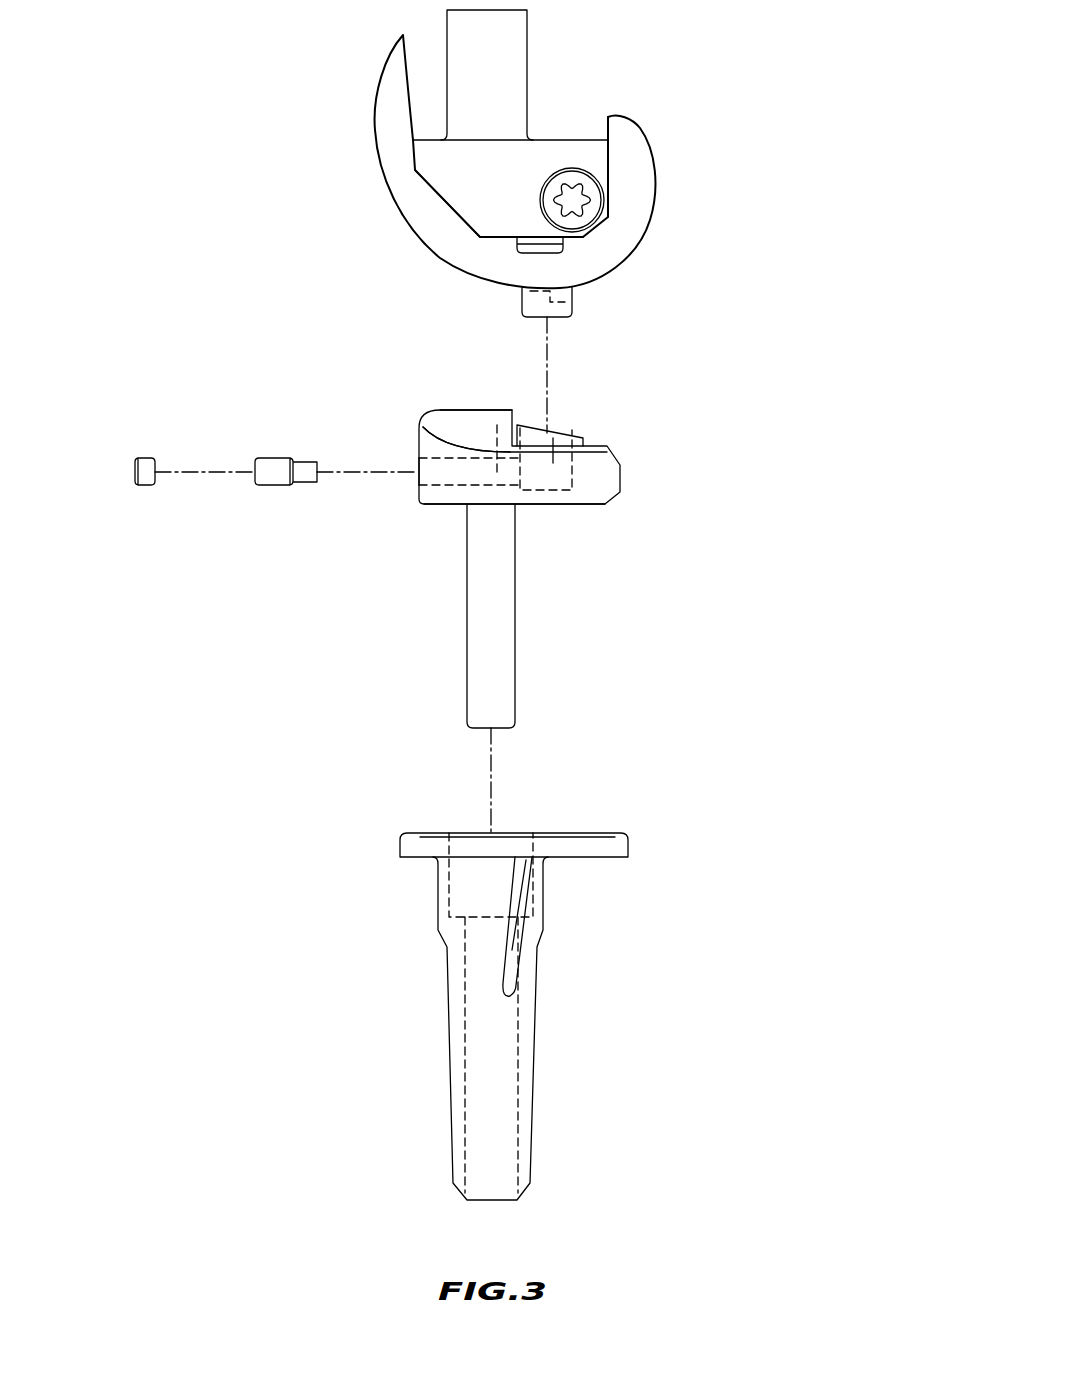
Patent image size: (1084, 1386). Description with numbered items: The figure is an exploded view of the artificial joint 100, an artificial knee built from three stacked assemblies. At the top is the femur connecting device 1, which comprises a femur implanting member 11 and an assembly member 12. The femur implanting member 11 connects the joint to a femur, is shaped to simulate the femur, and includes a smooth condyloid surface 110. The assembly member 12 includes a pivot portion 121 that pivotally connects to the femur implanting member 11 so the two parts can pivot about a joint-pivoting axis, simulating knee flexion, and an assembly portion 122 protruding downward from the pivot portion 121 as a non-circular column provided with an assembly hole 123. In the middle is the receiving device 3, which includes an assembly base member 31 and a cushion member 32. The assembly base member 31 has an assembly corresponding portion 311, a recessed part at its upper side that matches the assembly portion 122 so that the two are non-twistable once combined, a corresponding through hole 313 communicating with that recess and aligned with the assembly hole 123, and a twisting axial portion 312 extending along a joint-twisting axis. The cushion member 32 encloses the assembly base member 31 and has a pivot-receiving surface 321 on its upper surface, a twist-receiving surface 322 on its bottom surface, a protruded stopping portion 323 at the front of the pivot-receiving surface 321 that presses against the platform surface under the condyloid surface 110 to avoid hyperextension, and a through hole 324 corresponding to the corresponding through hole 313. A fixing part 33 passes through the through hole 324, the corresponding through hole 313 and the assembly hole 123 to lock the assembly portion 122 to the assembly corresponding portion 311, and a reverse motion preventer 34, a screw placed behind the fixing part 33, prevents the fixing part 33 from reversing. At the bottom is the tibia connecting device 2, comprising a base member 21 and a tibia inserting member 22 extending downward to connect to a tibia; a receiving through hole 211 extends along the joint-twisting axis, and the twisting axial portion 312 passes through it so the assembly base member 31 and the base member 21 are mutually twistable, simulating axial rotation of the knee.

The artificial joint 100 is at (814, 73).
The femur connecting device 1 is at (828, 100).
The femur implanting member 11 is at (628, 158).
The condyloid surface 110 is at (425, 245).
The assembly member 12 is at (780, 185).
The pivot portion 121 is at (593, 200).
The assembly portion 122 is at (570, 287).
The assembly hole 123 is at (573, 303).
The receiving device 3 is at (714, 385).
The assembly base member 31 is at (560, 438).
The assembly corresponding portion 311 is at (555, 438).
The twisting axial portion 312 is at (493, 617).
The corresponding through hole 313 is at (497, 425).
The cushion member 32 is at (603, 477).
The pivot-receiving surface 321 is at (450, 428).
The twist-receiving surface 322 is at (443, 497).
The stopping portion 323 is at (472, 422).
The through hole 324 is at (417, 475).
The fixing part 33 is at (272, 470).
The reverse motion preventer 34 is at (145, 470).
The tibia connecting device 2 is at (729, 835).
The base member 21 is at (603, 845).
The tibia inserting member 22 is at (525, 1032).
The receiving through hole 211 is at (493, 1098).